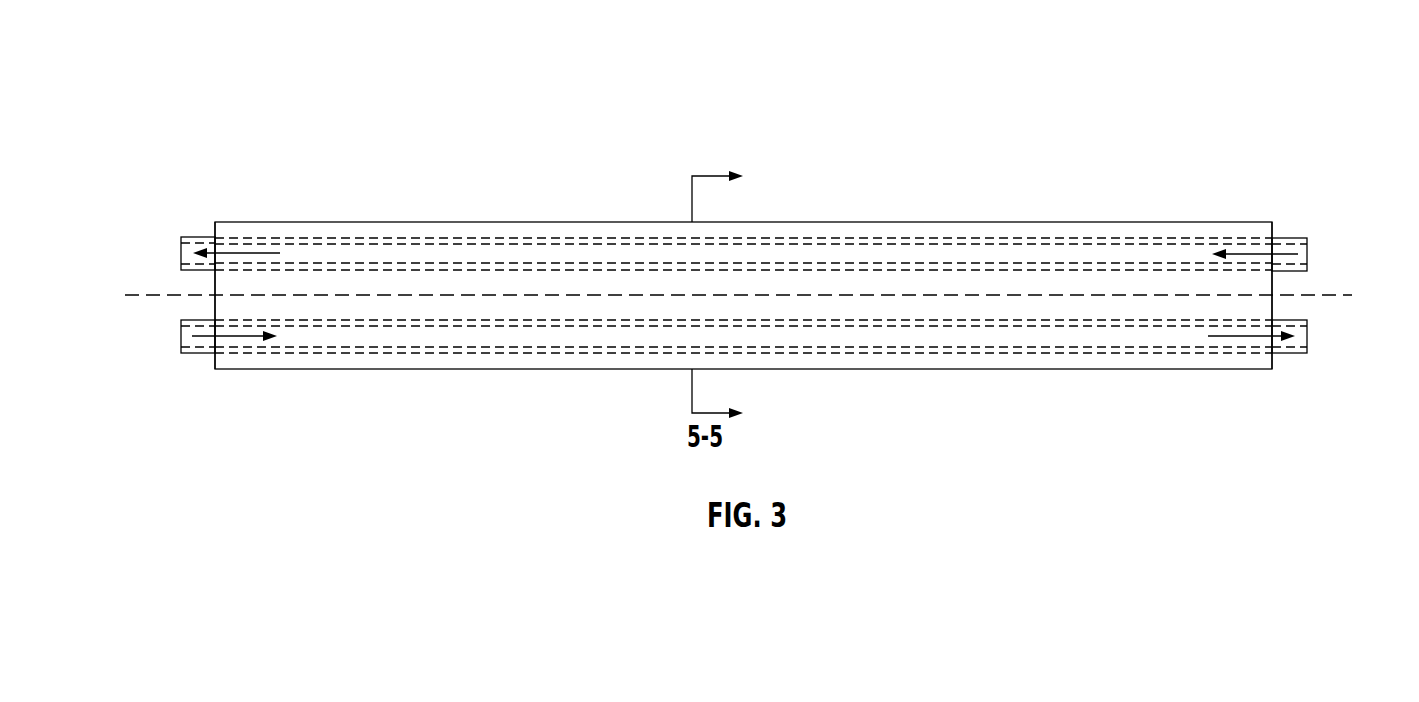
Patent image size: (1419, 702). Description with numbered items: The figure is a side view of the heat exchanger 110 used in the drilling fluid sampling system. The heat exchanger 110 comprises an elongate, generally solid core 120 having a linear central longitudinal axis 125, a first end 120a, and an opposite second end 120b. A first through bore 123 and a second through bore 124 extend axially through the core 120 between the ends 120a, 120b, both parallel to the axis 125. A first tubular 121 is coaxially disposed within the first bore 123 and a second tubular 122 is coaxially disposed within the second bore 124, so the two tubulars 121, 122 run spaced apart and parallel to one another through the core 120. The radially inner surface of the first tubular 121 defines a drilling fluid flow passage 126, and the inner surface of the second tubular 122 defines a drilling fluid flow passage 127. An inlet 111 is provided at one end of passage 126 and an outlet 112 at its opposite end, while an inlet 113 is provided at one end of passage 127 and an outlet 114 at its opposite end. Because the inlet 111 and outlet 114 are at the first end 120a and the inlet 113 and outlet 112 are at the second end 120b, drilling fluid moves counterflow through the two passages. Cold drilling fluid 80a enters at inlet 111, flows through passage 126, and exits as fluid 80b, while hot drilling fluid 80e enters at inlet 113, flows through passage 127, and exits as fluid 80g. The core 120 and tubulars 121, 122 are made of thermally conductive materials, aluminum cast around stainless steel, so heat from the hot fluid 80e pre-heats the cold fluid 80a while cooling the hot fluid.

The heat exchanger 110 is at (450, 70).
The core 120 is at (803, 222).
The first end 120a is at (213, 230).
The second end 120b is at (1274, 228).
The inlet 111 is at (173, 338).
The outlet 112 is at (1315, 337).
The inlet 113 is at (1315, 255).
The outlet 114 is at (173, 254).
The first tubular 121 is at (478, 352).
The second tubular 122 is at (447, 238).
The first through bore 123 is at (570, 352).
The second through bore 124 is at (555, 240).
The longitudinal axis 125 is at (1352, 295).
The drilling fluid flow passage 126 is at (950, 333).
The drilling fluid flow passage 127 is at (982, 257).
The cold drilling fluid 80a is at (197, 338).
The first fluid outlet flow 80b is at (1225, 337).
The hot drilling fluid 80e is at (1232, 253).
The second fluid outlet flow 80g is at (240, 250).